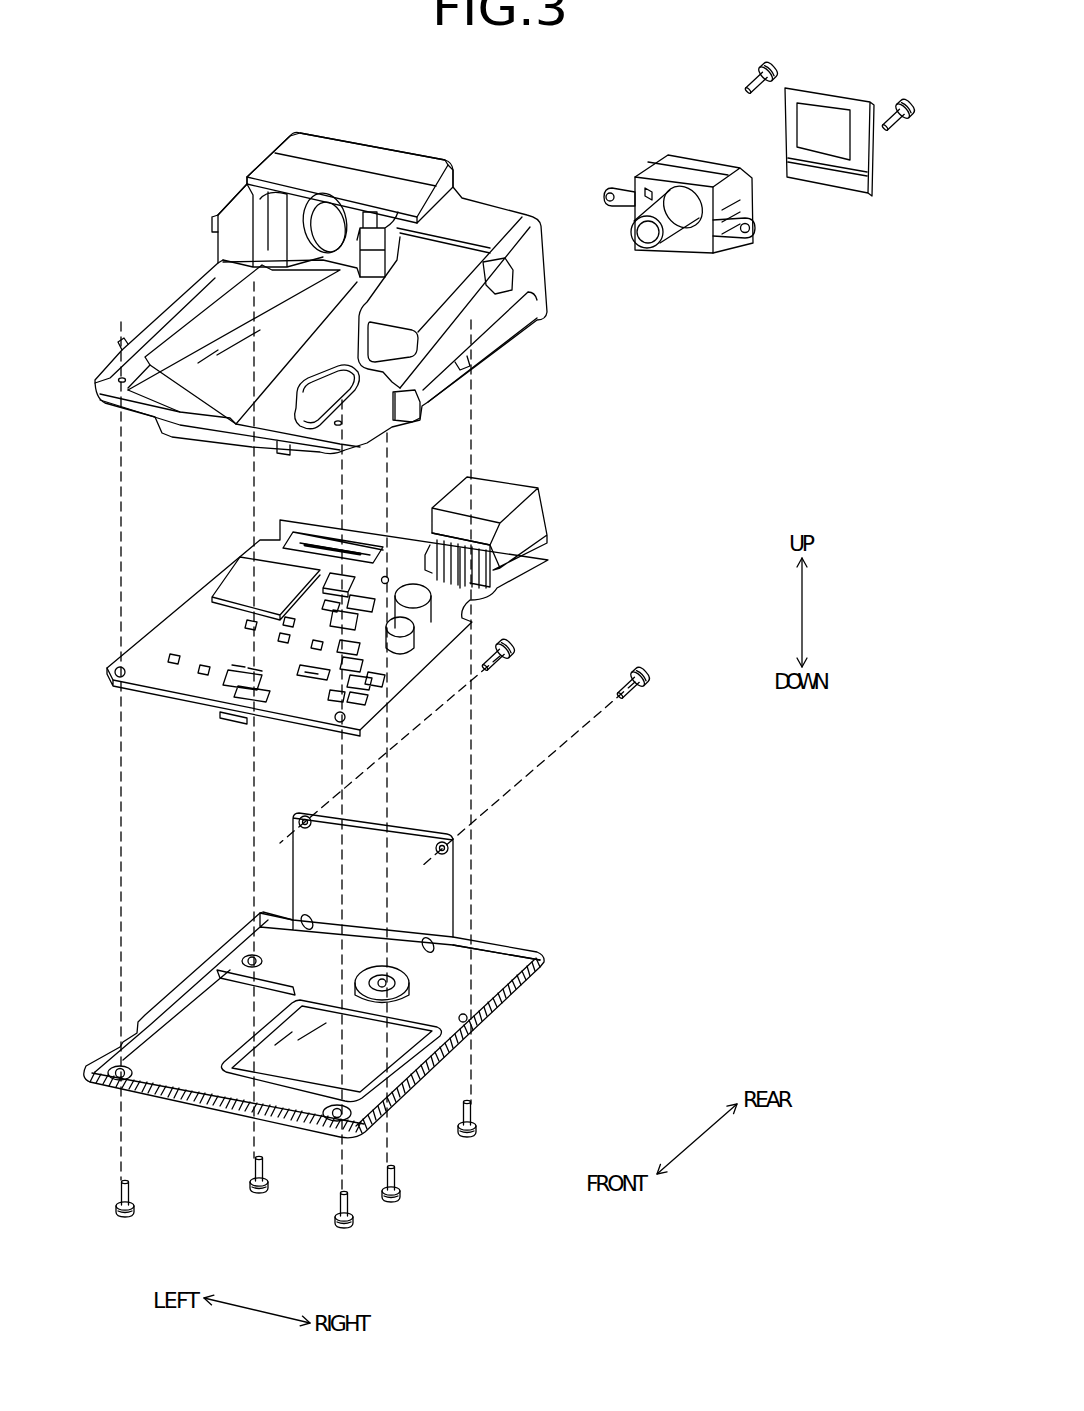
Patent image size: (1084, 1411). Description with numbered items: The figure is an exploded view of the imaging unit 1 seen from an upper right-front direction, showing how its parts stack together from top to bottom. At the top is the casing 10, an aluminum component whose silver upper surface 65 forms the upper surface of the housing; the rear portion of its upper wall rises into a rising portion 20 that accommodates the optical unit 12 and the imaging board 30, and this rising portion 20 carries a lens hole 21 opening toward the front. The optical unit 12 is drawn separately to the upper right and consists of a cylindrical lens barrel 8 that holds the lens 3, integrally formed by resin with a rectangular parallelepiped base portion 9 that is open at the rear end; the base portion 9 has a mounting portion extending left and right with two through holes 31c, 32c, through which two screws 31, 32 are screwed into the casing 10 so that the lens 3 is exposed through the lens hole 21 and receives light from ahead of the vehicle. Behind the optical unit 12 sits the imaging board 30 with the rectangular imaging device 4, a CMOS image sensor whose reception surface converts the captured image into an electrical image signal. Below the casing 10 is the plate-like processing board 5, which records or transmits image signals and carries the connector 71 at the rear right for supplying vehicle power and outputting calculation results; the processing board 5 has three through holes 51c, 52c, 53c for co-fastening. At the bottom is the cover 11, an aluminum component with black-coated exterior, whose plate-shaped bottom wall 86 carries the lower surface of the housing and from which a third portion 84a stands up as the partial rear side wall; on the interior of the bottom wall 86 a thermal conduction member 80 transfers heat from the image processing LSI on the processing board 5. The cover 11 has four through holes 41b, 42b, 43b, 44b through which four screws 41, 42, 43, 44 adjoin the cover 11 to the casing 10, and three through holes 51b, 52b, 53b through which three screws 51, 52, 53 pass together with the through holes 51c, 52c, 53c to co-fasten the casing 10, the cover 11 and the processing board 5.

The imaging unit 1 is at (153, 117).
The casing 10 is at (184, 221).
The rising portion 20 is at (390, 164).
The lens hole 21 is at (330, 211).
The upper surface 65 is at (203, 378).
The optical unit 12 is at (749, 266).
The base portion 9 is at (683, 166).
The lens 3 is at (647, 232).
The lens barrel 8 is at (690, 236).
The through hole 31c is at (608, 190).
The through hole 32c is at (758, 213).
The imaging board 30 is at (855, 204).
The imaging device 4 is at (827, 106).
The screw 31 is at (757, 76).
The screw 32 is at (900, 121).
The processing board 5 is at (204, 564).
The through hole 51c is at (386, 578).
The through hole 52c is at (113, 676).
The through hole 53c is at (338, 723).
The connector 71 is at (505, 487).
The screw 41 is at (516, 647).
The screw 42 is at (651, 672).
The cover 11 is at (216, 864).
The third portion 84a is at (406, 895).
The through hole 41b is at (303, 822).
The through hole 42b is at (442, 845).
The through hole 43b is at (252, 955).
The through hole 51b is at (386, 982).
The thermal conduction member 80 is at (364, 1059).
The bottom wall 86 is at (480, 980).
The through hole 44b is at (466, 1021).
The through hole 52b is at (117, 1081).
The through hole 53b is at (335, 1126).
The screw 52 is at (127, 1220).
The screw 43 is at (260, 1196).
The screw 53 is at (346, 1232).
The screw 51 is at (392, 1206).
The screw 44 is at (472, 1146).